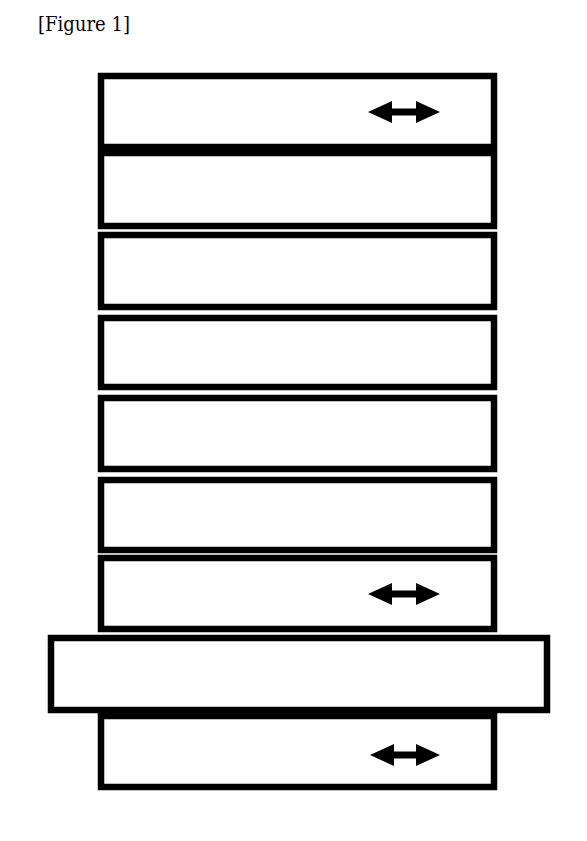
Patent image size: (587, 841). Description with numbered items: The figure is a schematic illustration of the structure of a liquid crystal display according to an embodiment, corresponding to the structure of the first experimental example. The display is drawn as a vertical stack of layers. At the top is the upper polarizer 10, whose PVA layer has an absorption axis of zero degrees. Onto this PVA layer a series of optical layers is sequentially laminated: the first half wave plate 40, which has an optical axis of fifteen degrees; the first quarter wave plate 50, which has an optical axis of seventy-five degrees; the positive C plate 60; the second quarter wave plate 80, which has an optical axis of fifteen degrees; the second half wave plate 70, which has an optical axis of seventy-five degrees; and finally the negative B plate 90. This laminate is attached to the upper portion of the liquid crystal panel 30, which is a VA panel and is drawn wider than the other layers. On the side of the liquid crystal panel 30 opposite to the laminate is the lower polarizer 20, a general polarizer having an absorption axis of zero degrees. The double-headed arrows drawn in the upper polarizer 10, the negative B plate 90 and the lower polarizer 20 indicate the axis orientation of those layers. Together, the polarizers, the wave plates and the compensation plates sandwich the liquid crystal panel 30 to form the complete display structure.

The upper polarizer 10 is at (297, 111).
The first half wave plate 40 is at (297, 189).
The first quarter wave plate 50 is at (297, 271).
The positive C plate 60 is at (297, 352).
The second quarter wave plate 80 is at (297, 433).
The second half wave plate 70 is at (297, 515).
The negative B plate 90 is at (297, 593).
The liquid crystal panel 30 is at (299, 674).
The lower polarizer 20 is at (297, 751).